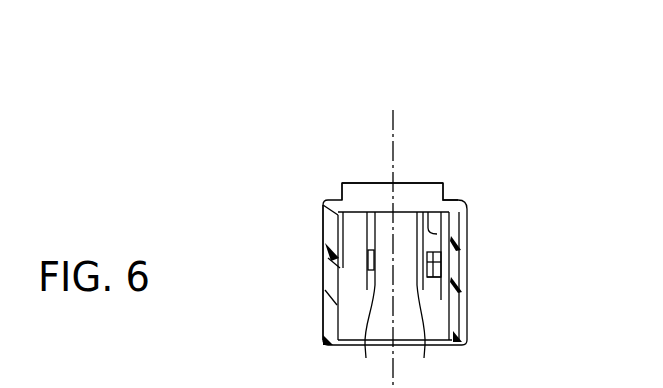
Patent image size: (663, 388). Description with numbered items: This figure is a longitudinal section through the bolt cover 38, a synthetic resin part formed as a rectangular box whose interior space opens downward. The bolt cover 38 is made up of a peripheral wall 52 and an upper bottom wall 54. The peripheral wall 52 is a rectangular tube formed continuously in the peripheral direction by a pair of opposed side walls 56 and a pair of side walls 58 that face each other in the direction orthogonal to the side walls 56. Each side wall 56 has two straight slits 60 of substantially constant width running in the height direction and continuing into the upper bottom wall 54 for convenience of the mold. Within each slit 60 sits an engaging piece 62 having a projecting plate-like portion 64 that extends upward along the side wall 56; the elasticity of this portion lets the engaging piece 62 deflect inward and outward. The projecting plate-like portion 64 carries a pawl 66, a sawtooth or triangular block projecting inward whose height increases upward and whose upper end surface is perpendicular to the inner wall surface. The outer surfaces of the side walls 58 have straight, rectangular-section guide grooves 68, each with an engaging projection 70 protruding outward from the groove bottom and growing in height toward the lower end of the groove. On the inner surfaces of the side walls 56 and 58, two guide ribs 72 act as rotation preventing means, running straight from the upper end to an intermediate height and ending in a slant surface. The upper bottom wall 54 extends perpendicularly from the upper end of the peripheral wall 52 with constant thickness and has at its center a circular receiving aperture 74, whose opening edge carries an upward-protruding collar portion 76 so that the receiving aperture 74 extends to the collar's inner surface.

The bolt cover 38 is at (475, 190).
The peripheral wall 52 is at (315, 315).
The upper bottom wall 54 is at (448, 201).
The side walls 56 is at (330, 285).
The side walls 58 is at (459, 221).
The slits 60 is at (430, 212).
The engaging piece 62 is at (508, 253).
The projecting plate-like portion 64 is at (437, 278).
The pawl 66 is at (432, 263).
The guide grooves 68 is at (468, 335).
The engaging projection 70 is at (459, 288).
The guide ribs 72 is at (340, 233).
The receiving aperture 74 is at (353, 207).
The collar portion 76 is at (349, 191).